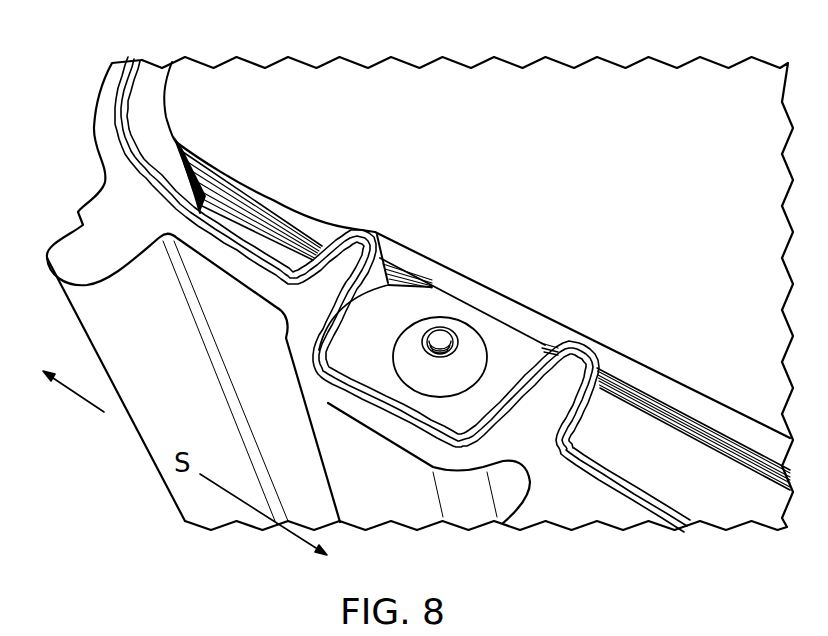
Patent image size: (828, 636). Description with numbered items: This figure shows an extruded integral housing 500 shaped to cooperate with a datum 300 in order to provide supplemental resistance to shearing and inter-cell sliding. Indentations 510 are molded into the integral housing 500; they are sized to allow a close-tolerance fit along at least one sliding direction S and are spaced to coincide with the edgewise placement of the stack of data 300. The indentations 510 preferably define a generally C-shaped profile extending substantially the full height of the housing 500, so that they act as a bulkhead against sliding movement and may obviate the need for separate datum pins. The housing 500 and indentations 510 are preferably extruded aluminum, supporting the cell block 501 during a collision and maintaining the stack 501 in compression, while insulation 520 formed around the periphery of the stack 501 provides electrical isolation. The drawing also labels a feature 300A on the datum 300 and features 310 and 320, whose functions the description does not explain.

The integral housing 500 is at (83, 224).
The cell block 501 is at (618, 163).
The molded indentations 510 is at (543, 460).
The insulation 520 is at (141, 59).
The datum 300 is at (397, 302).
The threaded hole 300A is at (446, 333).
The pad 310 is at (428, 378).
The plate 320 is at (533, 339).